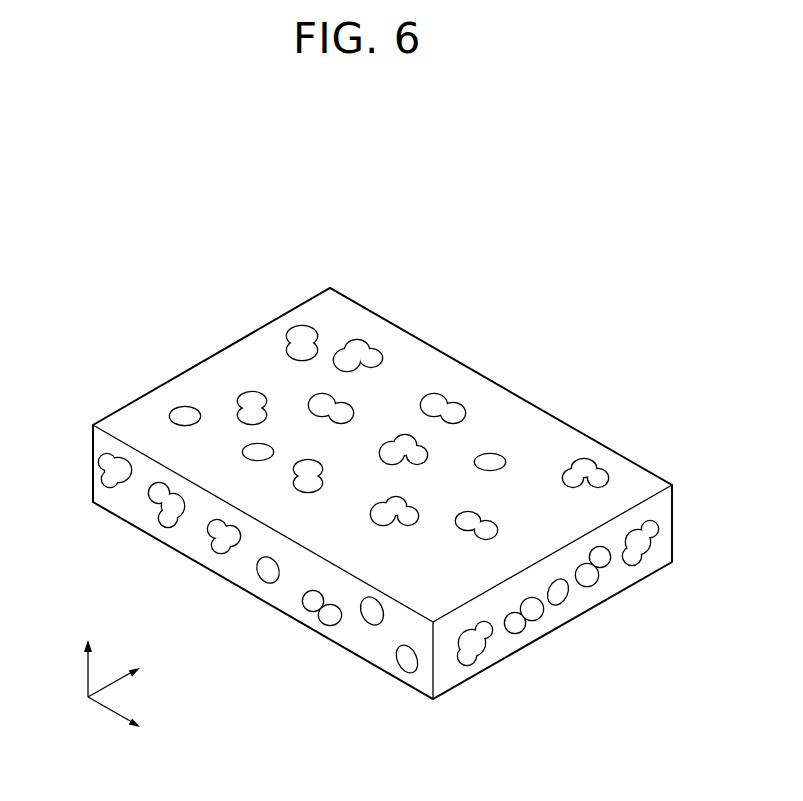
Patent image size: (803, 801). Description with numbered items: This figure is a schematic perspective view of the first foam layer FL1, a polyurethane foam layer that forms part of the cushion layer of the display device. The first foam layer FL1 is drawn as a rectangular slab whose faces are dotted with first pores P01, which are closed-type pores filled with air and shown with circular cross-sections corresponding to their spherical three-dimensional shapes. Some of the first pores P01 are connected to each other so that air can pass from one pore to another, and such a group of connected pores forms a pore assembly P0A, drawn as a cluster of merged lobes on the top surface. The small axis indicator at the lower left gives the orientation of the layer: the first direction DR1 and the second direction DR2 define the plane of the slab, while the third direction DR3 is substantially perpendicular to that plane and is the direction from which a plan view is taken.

The first foam layer FL1 is at (382, 457).
The first pores P01 is at (490, 458).
The pore assembly P0A is at (584, 471).
The first direction DR1 is at (137, 721).
The second direction DR2 is at (137, 674).
The third direction DR3 is at (90, 656).